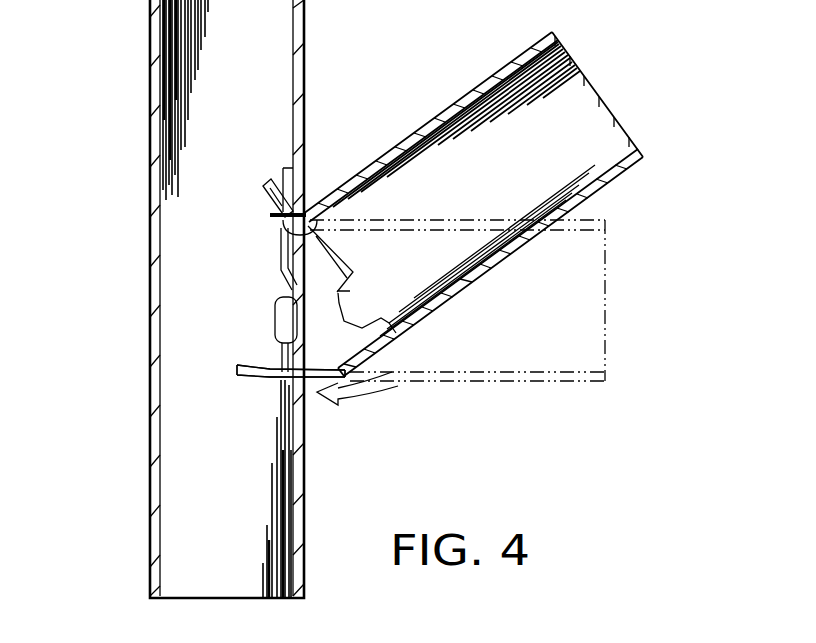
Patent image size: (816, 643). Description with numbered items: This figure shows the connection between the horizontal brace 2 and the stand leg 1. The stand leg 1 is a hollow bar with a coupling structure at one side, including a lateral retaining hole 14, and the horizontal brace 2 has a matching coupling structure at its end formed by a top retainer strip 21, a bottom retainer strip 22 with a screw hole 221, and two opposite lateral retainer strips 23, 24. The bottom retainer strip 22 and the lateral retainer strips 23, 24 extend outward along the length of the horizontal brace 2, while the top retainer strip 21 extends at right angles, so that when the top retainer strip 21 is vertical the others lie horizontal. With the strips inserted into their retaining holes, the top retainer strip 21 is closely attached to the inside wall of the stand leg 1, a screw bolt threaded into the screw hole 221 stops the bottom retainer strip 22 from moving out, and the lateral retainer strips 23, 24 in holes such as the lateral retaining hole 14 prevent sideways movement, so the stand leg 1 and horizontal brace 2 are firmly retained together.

The stand leg 1 is at (157, 510).
The horizontal brace 2 is at (473, 251).
The top retainer strip 21 is at (283, 216).
The bottom retainer strip 22 is at (363, 330).
The screw hole 221 is at (390, 373).
The lateral retainer strip 23 is at (348, 291).
The lateral retainer strip 24 is at (291, 371).
The lateral retaining hole 14 is at (285, 332).